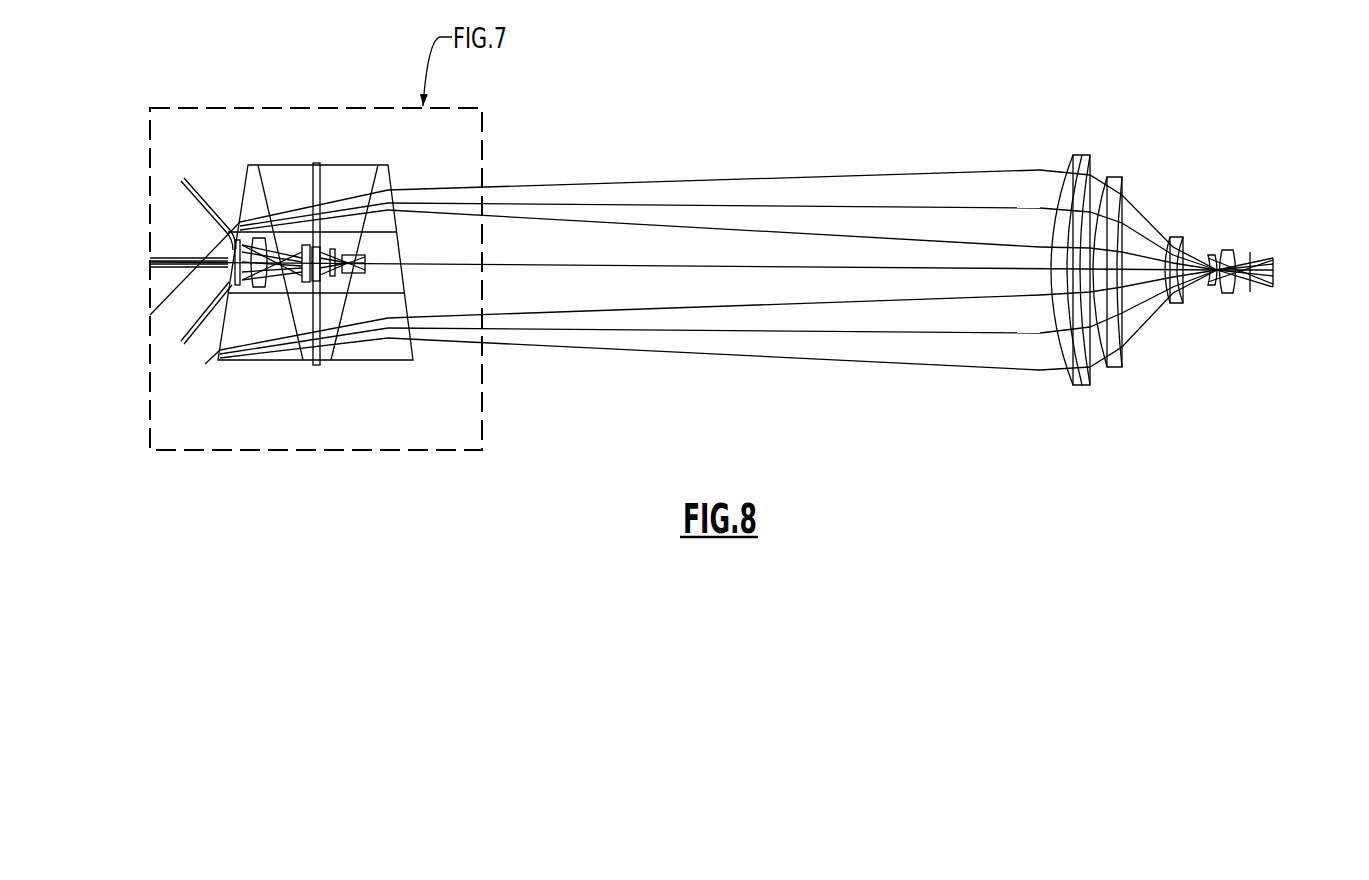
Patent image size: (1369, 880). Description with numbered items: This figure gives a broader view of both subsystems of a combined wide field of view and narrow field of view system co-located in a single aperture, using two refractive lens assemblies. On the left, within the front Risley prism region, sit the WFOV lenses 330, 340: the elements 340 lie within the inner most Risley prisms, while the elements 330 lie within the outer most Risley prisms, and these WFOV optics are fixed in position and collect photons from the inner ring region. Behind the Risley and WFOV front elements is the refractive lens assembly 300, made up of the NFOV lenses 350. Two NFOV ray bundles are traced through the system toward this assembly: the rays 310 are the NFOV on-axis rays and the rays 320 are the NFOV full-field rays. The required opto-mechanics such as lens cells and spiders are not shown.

The refractive lens assembly 300 is at (1162, 265).
The rays 310 is at (748, 204).
The rays 320 is at (603, 218).
The WFOV lenses 330 is at (267, 291).
The WFOV lenses 340 is at (328, 283).
The NFOV lenses 350 is at (1192, 308).